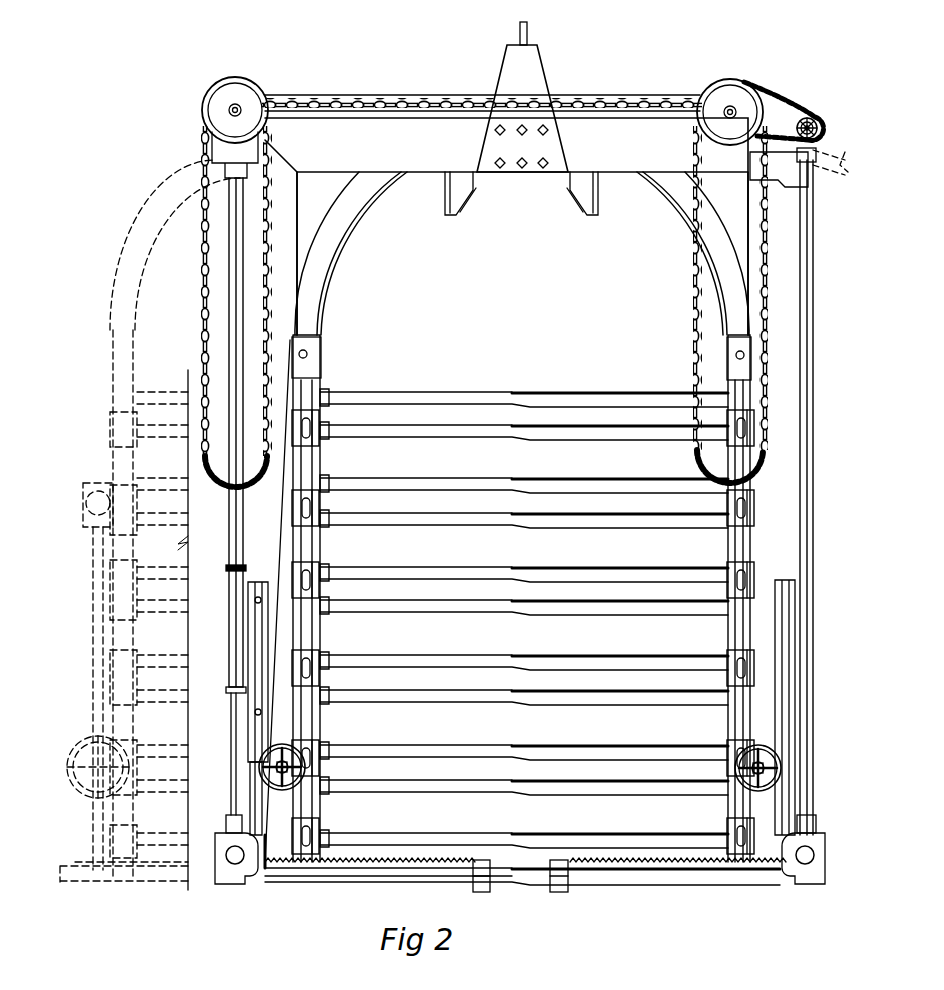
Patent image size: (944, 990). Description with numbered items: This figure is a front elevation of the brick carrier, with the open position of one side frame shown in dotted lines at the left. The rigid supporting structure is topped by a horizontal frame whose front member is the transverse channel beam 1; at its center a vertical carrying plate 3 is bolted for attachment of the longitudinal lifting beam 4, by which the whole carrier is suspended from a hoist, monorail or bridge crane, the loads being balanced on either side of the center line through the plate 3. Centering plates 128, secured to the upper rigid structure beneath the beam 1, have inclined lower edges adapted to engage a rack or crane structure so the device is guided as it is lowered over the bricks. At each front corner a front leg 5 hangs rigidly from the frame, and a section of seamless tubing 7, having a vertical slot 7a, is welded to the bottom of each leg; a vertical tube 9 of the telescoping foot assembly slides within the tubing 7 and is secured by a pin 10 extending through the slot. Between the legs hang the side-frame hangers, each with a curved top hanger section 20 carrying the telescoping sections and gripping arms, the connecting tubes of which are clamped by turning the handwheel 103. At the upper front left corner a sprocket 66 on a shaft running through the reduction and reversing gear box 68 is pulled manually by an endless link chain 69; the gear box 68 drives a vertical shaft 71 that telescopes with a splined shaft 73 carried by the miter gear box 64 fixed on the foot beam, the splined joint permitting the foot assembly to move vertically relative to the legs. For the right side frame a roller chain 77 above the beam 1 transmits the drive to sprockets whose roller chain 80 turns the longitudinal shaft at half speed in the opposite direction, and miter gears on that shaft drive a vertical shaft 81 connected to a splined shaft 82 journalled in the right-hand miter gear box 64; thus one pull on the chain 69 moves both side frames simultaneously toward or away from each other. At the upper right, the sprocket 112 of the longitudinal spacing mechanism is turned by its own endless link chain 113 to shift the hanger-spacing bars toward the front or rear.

The transverse channel beam 1 is at (432, 168).
The vertical carrying plate 3 is at (508, 78).
The longitudinal lifting beam 4 is at (530, 30).
The front leg 5 is at (291, 195).
The seamless tubing section 7 is at (255, 744).
The vertical slot 7a is at (258, 596).
The vertical tube 9 is at (263, 824).
The pin 10 is at (255, 714).
The curved top hanger section 20 is at (334, 268).
The miter gear box 64 is at (246, 886).
The sprocket 66 is at (236, 78).
The reduction and reversing gear box 68 is at (230, 152).
The endless link chain 69 is at (203, 314).
The vertical shaft 71 is at (236, 516).
The splined shaft 73 is at (232, 784).
The roller chain 77 is at (586, 98).
The roller chain 80 is at (780, 108).
The vertical shaft 81 is at (808, 528).
The splined shaft 82 is at (806, 740).
The handwheel 103 is at (306, 768).
The sprocket 112 is at (738, 82).
The endless link chain 113 is at (700, 302).
The centering plate 128 is at (466, 201).